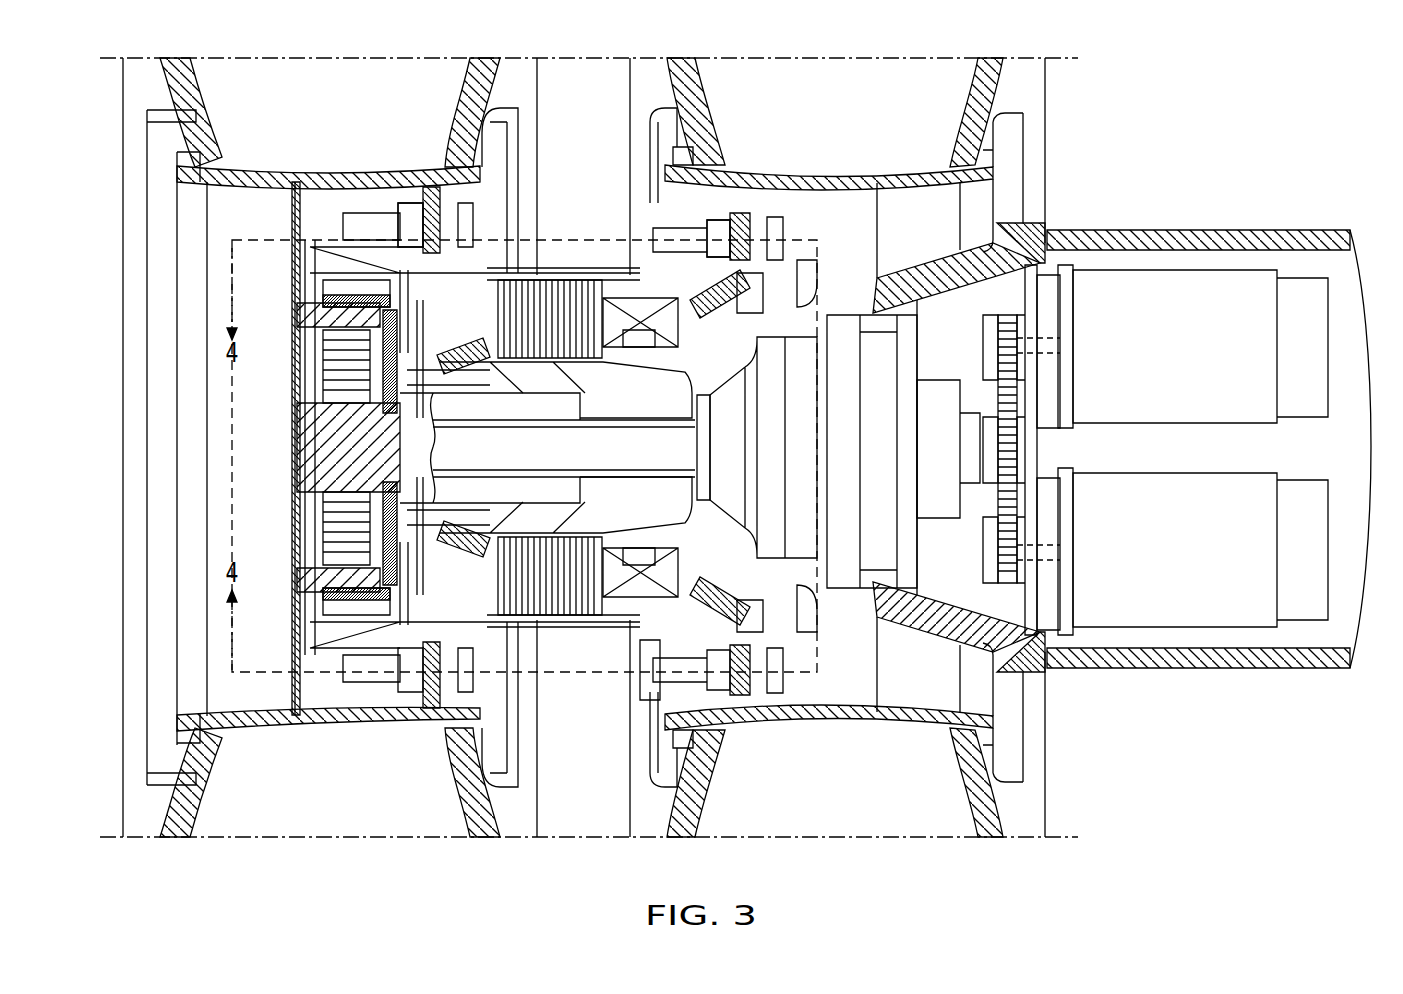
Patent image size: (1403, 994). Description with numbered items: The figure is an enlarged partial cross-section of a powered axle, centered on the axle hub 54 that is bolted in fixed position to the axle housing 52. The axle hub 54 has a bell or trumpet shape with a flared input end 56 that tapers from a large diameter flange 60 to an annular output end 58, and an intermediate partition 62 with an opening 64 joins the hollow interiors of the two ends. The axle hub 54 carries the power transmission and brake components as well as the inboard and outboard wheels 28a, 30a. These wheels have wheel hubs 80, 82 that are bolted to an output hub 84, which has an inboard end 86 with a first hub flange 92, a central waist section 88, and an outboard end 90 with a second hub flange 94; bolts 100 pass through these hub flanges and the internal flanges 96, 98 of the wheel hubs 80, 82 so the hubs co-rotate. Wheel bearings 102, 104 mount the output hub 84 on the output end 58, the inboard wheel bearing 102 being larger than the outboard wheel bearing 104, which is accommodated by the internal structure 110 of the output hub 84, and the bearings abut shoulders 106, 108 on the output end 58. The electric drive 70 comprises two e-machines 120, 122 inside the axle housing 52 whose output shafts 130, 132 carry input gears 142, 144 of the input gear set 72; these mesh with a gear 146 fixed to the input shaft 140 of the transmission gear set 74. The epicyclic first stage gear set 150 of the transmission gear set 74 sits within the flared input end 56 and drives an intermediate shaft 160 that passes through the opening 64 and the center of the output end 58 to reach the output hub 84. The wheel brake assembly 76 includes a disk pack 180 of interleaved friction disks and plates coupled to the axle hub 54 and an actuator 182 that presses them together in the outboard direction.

The outboard wheel 30a is at (148, 108).
The inboard wheel 28a is at (1033, 110).
The axle housing 52 is at (1270, 240).
The axle hub 54 is at (1030, 665).
The flared input end 56 is at (945, 272).
The annular output end 58 is at (635, 535).
The flange 60 is at (1033, 232).
The intermediate partition 62 is at (695, 437).
The opening 64 is at (690, 512).
The electric drive 70 is at (1340, 335).
The input gear set 72 is at (962, 535).
The transmission gear set 74 is at (928, 356).
The wheel brake assembly 76 is at (623, 292).
The inboard wheel hub 80 is at (870, 724).
The outboard wheel hub 82 is at (248, 728).
The output hub 84 is at (740, 640).
The inboard end 86 is at (745, 648).
The central waist section 88 is at (612, 620).
The outboard end 90 is at (395, 645).
The first hub flange 92 is at (757, 216).
The second hub flange 94 is at (548, 168).
The internal flange 96 is at (728, 252).
The internal flange 98 is at (437, 200).
The bolts 100 is at (415, 187).
The inboard wheel bearing 102 is at (822, 300).
The outboard wheel bearing 104 is at (470, 400).
The shoulder 106 is at (622, 300).
The shoulder 108 is at (552, 272).
The internal structure 110 is at (300, 268).
The e-machine 120 is at (1200, 346).
The e-machine 122 is at (1200, 550).
The output shaft 130 is at (1043, 337).
The output shaft 132 is at (1045, 538).
The input shaft 140 is at (1003, 415).
The input gear 142 is at (1010, 315).
The input gear 144 is at (1010, 583).
The gear 146 is at (1010, 460).
The first stage gear set 150 is at (877, 558).
The intermediate shaft 160 is at (300, 380).
The disk pack 180 is at (548, 625).
The actuator 182 is at (652, 350).